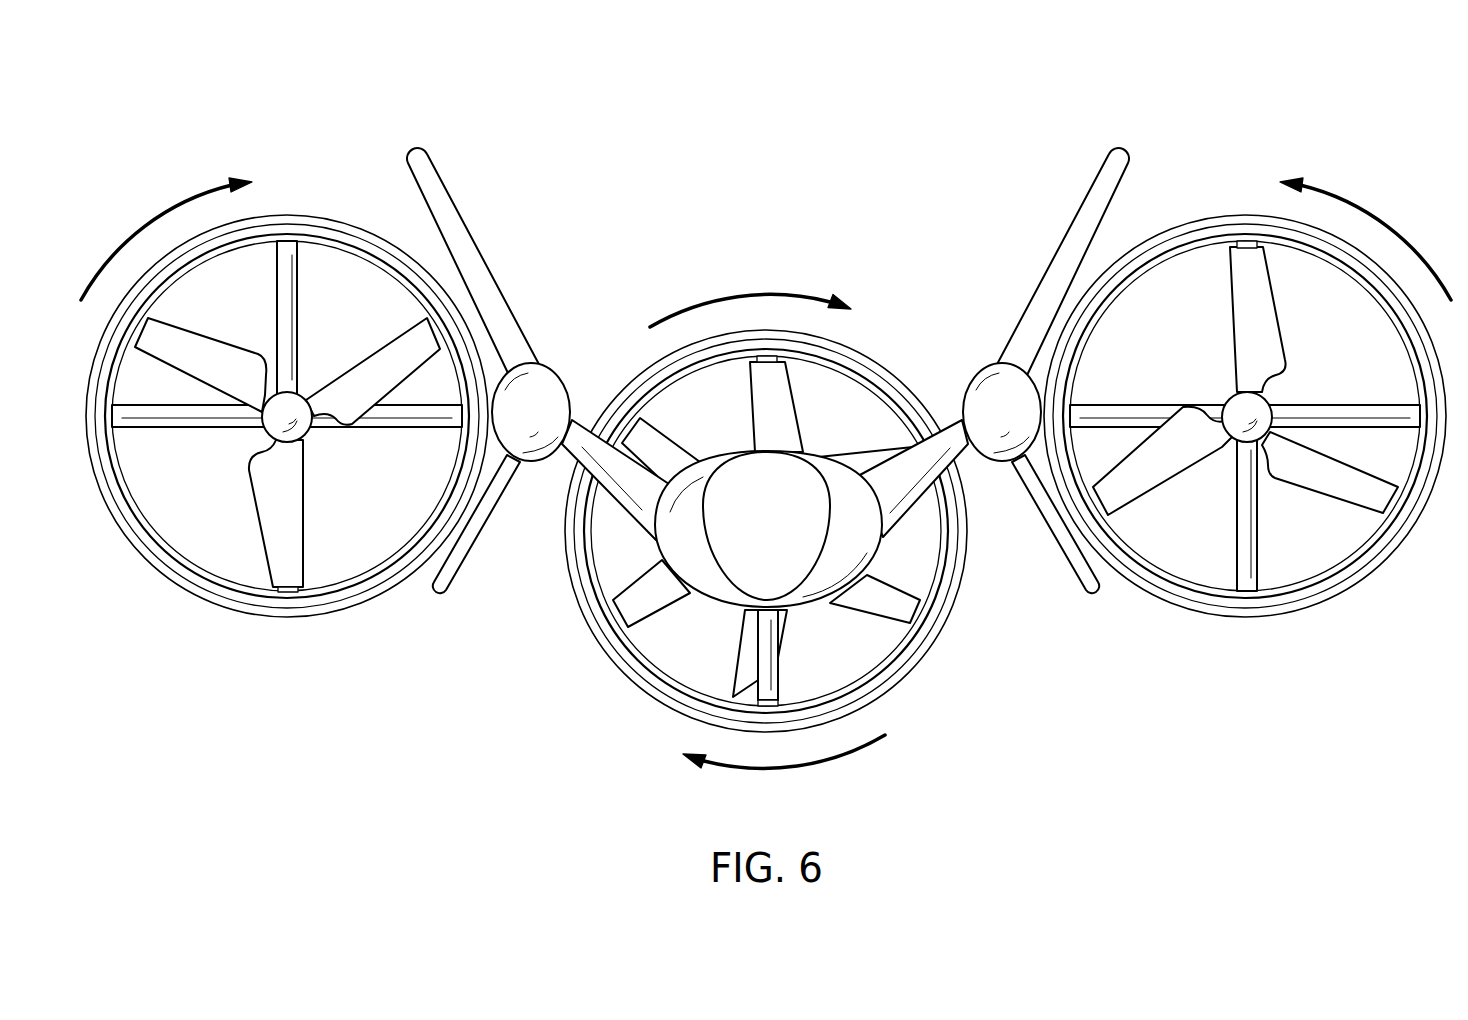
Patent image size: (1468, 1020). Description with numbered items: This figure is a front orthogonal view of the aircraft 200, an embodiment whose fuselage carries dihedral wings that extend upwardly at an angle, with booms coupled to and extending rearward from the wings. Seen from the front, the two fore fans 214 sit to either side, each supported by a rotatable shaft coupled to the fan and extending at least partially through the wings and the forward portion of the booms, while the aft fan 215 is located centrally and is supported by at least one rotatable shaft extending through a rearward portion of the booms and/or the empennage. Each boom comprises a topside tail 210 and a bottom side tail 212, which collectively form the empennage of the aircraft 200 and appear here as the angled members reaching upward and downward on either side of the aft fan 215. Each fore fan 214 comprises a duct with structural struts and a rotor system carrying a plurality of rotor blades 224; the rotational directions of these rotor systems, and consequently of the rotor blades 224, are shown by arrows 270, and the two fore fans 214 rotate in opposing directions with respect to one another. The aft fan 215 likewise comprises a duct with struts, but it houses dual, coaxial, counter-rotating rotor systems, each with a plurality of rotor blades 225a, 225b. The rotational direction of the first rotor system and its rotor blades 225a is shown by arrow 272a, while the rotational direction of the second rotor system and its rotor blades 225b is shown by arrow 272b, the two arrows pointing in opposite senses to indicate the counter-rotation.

The aircraft 200 is at (566, 114).
The topside tail 210 is at (483, 260).
The bottom side tail 212 is at (464, 564).
The fore fan 214 is at (185, 590).
The aft fan 215 is at (629, 380).
The rotor blades 224 is at (249, 486).
The rotor blades 225a is at (650, 614).
The rotor blades 225b is at (860, 452).
The arrows 270 is at (142, 227).
The arrow 272a is at (803, 765).
The arrow 272b is at (705, 300).